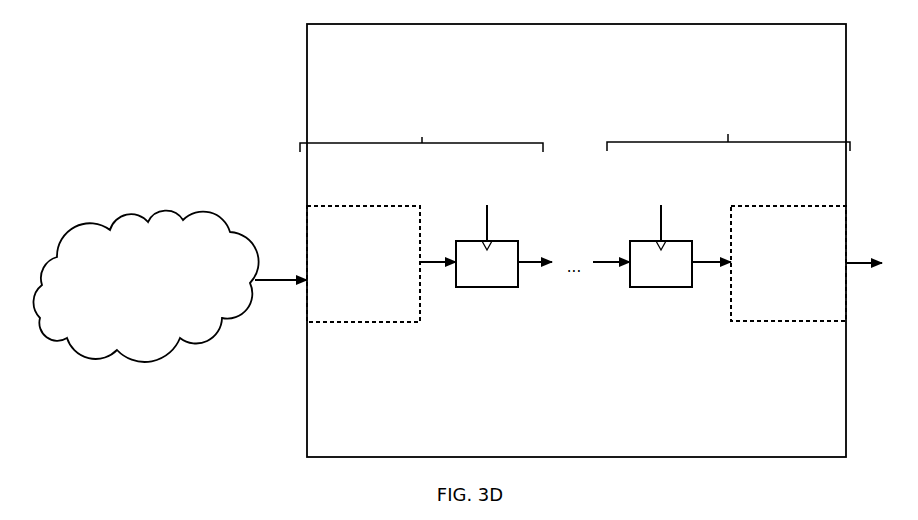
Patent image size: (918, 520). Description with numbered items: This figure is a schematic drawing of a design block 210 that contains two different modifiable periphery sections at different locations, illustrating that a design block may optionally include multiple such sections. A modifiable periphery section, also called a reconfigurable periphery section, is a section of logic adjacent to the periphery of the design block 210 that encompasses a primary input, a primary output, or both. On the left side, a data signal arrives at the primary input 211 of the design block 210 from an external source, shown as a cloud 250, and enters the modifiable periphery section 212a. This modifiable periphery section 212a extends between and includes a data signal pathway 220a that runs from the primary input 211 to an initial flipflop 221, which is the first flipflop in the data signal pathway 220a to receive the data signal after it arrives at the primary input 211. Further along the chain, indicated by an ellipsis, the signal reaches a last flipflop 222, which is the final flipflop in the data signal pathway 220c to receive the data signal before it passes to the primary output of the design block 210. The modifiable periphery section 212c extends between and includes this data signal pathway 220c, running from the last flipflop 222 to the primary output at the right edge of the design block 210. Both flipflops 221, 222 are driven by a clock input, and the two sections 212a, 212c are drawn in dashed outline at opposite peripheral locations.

The design block 210 is at (846, 73).
The primary input 211 is at (305, 277).
The modifiable periphery section 212a is at (363, 264).
The modifiable periphery section 212c is at (806, 263).
The data signal pathway 220a is at (421, 132).
The data signal pathway 220c is at (728, 129).
The initial flipflop 221 is at (487, 287).
The last flipflop 222 is at (661, 287).
The external network / source 250 is at (145, 286).